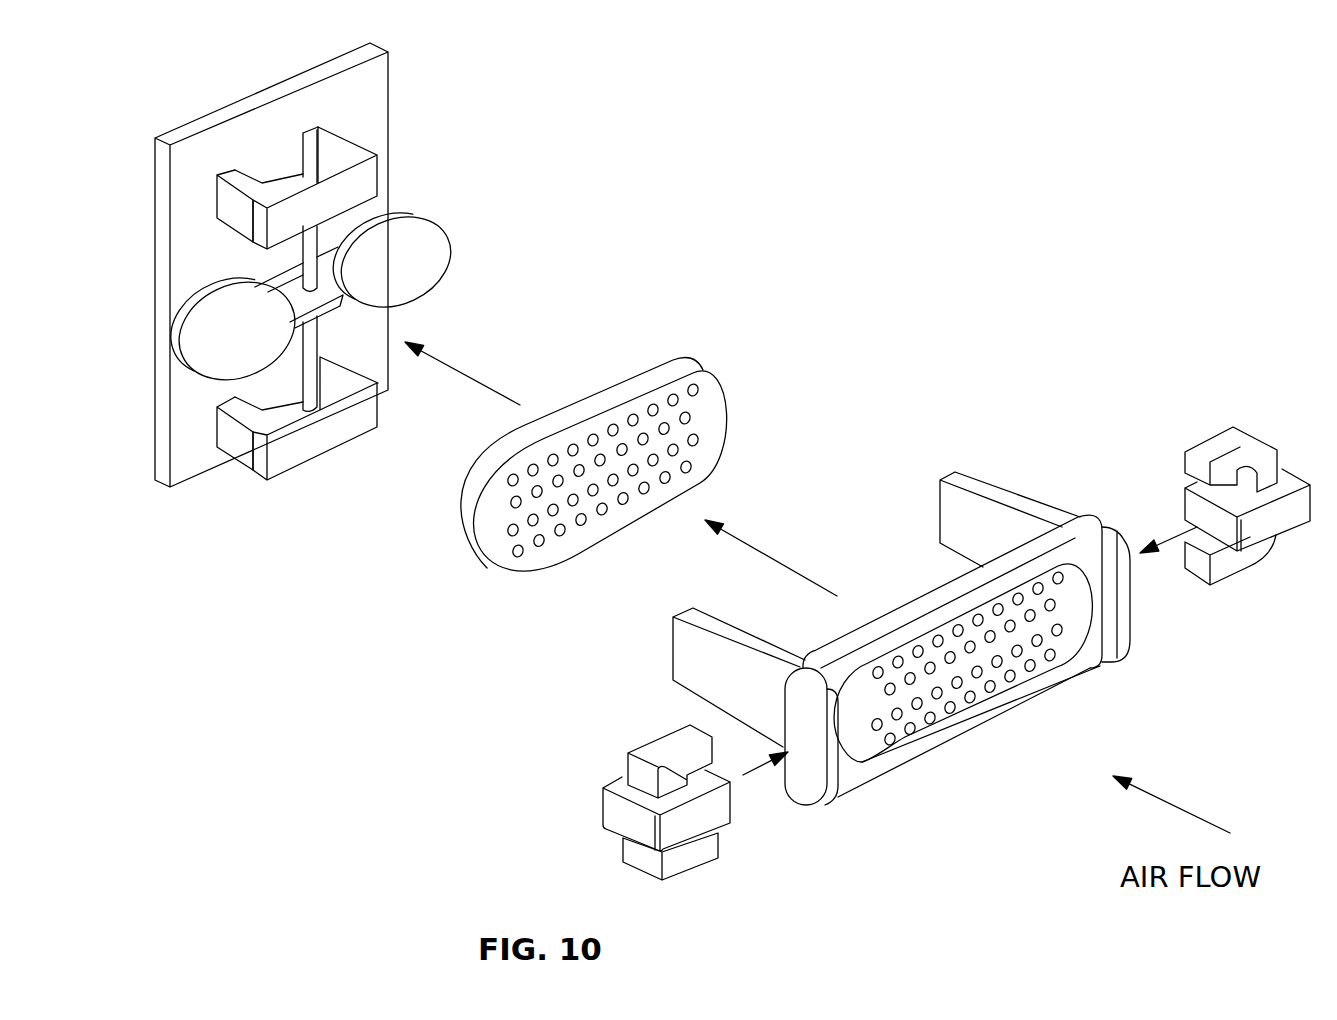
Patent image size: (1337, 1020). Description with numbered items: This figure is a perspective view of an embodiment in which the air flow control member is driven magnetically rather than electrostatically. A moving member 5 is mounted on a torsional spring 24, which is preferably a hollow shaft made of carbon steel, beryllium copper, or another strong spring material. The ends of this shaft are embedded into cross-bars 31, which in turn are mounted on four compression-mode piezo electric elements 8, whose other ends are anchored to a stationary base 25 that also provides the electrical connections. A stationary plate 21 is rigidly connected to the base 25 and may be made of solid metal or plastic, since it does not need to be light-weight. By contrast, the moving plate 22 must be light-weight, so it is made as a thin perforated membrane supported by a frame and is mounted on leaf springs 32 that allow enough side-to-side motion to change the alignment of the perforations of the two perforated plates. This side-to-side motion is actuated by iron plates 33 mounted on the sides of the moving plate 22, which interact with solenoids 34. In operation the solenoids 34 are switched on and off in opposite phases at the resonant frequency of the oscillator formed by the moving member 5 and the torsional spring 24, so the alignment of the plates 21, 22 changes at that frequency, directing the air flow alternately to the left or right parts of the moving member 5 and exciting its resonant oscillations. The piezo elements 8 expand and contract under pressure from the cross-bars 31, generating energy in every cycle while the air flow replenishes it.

The moving member 5 is at (433, 248).
The compression-mode piezo electric element 8 is at (232, 207).
The stationary plate 21 is at (638, 374).
The moving plate 22 is at (1082, 514).
The torsional spring 24 is at (313, 247).
The stationary base 25 is at (168, 260).
The cross-bar 31 is at (350, 190).
The leaf spring 32 is at (951, 472).
The iron plate 33 is at (836, 766).
The solenoid 34 is at (690, 866).